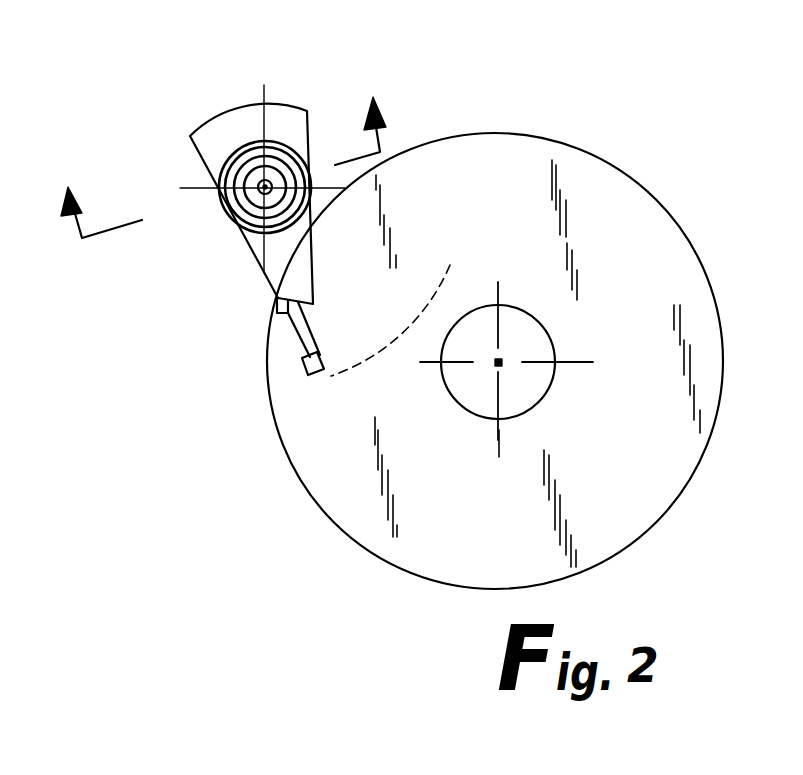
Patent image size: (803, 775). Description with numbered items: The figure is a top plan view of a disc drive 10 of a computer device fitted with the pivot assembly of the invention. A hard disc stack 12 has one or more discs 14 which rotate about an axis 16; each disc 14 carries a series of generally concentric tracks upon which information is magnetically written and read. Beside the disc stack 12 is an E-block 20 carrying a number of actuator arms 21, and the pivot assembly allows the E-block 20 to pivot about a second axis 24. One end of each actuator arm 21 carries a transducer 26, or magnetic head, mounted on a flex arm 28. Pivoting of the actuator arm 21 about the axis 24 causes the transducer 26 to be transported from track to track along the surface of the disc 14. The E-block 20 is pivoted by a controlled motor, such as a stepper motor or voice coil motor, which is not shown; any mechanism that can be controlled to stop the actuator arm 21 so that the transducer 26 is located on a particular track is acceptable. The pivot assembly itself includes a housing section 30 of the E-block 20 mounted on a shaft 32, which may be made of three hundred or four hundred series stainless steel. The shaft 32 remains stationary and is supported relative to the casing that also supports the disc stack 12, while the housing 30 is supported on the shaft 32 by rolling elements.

The disc drive 10 is at (237, 219).
The hard disc stack 12 is at (473, 361).
The disc 14 is at (656, 238).
The axis 16 is at (502, 364).
The E-block 20 is at (284, 219).
The actuator arm 21 is at (295, 258).
The axis 24 is at (240, 223).
The transducer 26 is at (222, 127).
The flex arm 28 is at (280, 343).
The housing section 30 is at (255, 141).
The shaft 32 is at (250, 178).